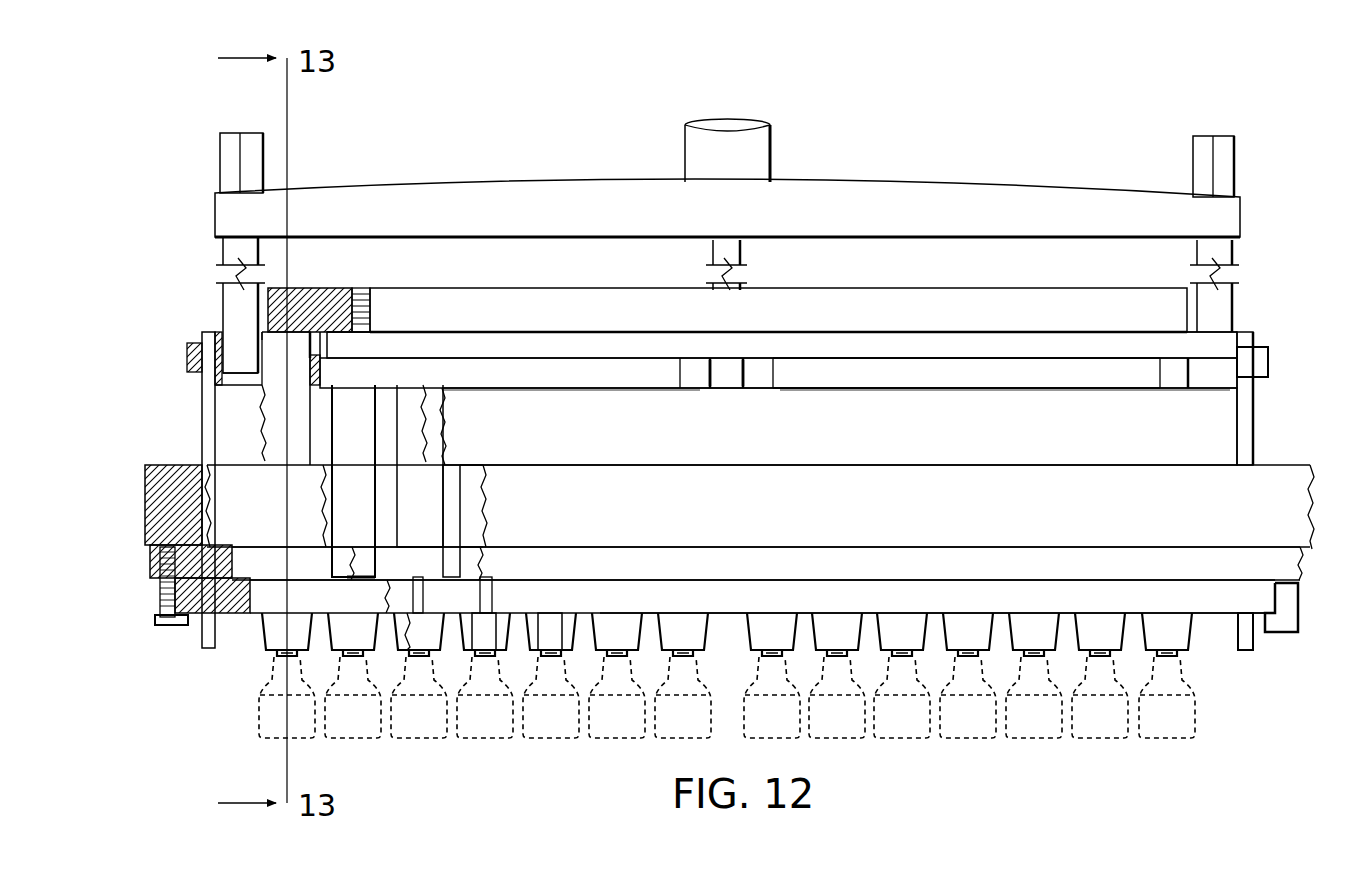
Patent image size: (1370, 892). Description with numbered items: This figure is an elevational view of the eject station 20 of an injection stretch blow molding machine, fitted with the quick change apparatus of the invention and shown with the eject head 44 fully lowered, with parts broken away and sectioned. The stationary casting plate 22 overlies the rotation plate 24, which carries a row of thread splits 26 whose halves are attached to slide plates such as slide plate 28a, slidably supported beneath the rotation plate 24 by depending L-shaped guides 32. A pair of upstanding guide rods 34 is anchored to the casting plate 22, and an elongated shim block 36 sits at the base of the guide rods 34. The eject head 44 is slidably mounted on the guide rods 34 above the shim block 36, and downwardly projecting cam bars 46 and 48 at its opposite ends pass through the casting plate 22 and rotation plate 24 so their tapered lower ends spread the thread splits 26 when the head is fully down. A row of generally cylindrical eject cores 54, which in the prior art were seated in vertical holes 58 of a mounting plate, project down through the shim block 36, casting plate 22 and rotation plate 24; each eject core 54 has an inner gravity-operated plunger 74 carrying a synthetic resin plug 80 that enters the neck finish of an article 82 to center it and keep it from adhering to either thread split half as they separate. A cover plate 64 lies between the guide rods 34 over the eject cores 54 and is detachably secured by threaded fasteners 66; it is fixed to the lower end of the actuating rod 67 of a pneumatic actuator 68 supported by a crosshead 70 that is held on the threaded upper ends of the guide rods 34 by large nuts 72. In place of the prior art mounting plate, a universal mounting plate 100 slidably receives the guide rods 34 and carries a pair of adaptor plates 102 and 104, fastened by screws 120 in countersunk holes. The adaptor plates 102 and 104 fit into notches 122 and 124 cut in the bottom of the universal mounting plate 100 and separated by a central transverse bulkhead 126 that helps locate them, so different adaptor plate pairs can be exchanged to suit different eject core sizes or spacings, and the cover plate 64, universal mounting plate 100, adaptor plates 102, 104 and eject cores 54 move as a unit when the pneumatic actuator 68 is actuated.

The eject station 20 is at (1128, 116).
The casting plate 22 is at (1300, 517).
The rotation plate 24 is at (1295, 568).
The thread splits 26 is at (261, 641).
The slide plate 28a is at (1212, 600).
The L-shaped guides 32 is at (1295, 612).
The guide rods 34 is at (228, 299).
The shim block 36 is at (1218, 438).
The eject head 44 is at (951, 287).
The cam bar 46 is at (208, 410).
The cam bar 48 is at (1255, 407).
The eject cores 54 is at (386, 414).
The vertical holes 58 is at (270, 425).
The cover plate 64 is at (488, 300).
The threaded fasteners 66 is at (366, 290).
The actuating rod 67 is at (745, 277).
The pneumatic actuator 68 is at (772, 147).
The crosshead 70 is at (554, 190).
The large nuts 72 is at (227, 158).
The plunger 74 is at (423, 593).
The plug 80 is at (497, 616).
The article 82 is at (1170, 727).
The universal mounting plate 100 is at (614, 345).
The adaptor plate 102 is at (489, 380).
The adaptor plate 104 is at (958, 380).
The screws 120 is at (313, 288).
The notch 122 is at (462, 362).
The notch 124 is at (928, 368).
The bulkhead 126 is at (725, 378).